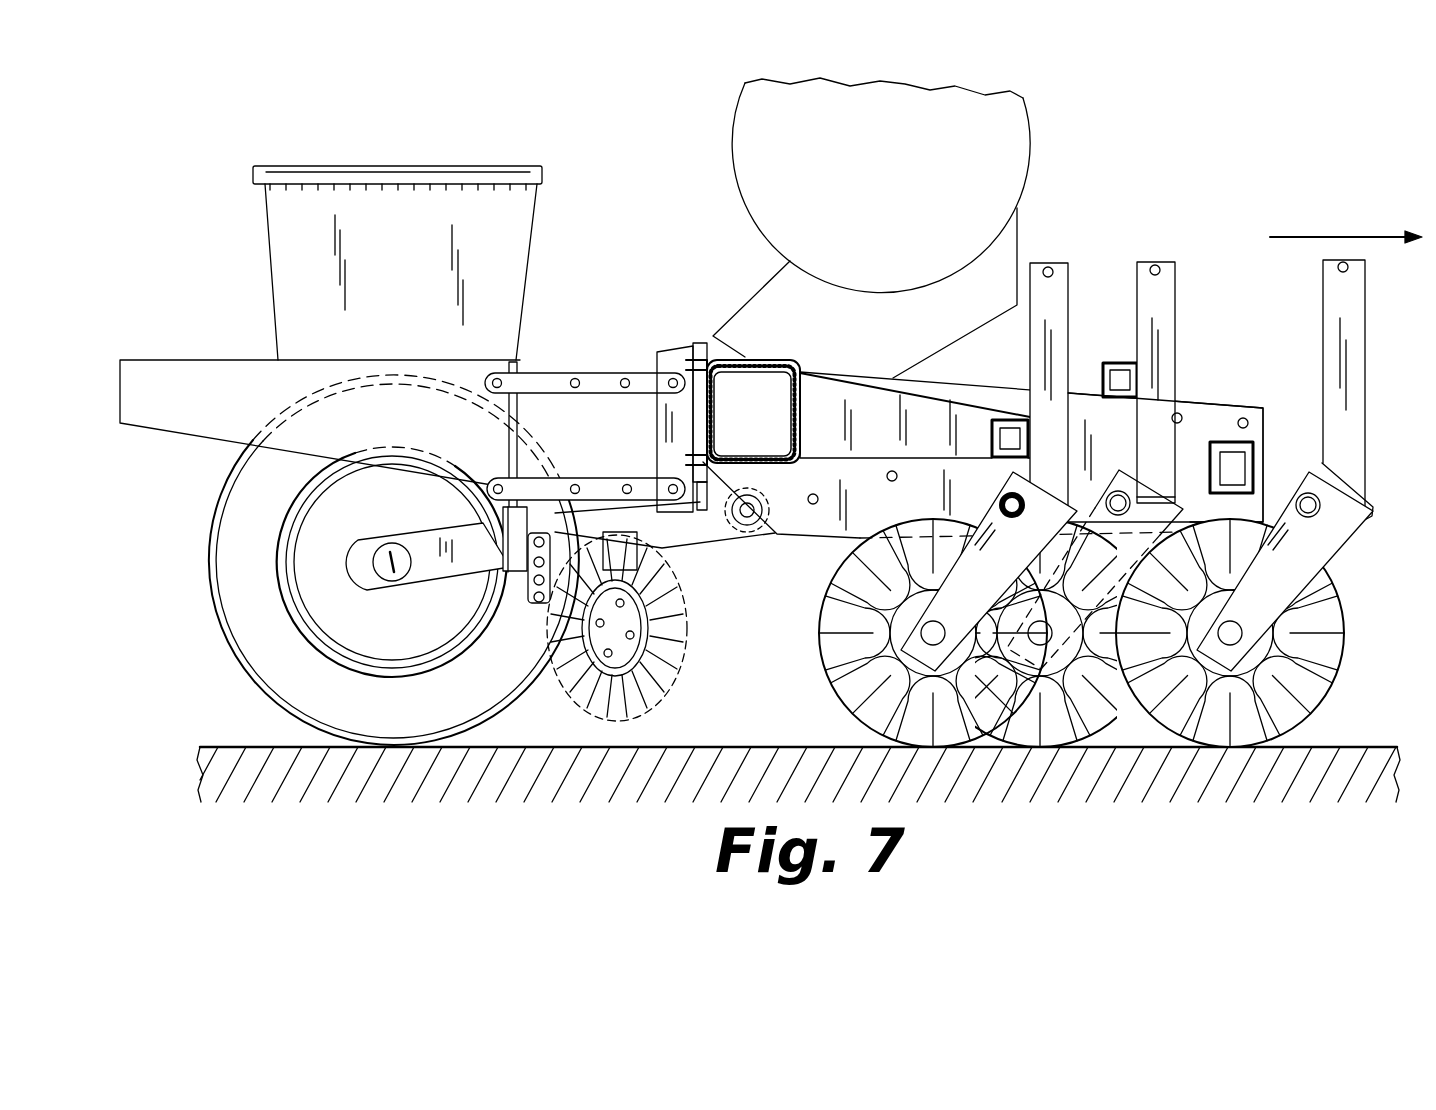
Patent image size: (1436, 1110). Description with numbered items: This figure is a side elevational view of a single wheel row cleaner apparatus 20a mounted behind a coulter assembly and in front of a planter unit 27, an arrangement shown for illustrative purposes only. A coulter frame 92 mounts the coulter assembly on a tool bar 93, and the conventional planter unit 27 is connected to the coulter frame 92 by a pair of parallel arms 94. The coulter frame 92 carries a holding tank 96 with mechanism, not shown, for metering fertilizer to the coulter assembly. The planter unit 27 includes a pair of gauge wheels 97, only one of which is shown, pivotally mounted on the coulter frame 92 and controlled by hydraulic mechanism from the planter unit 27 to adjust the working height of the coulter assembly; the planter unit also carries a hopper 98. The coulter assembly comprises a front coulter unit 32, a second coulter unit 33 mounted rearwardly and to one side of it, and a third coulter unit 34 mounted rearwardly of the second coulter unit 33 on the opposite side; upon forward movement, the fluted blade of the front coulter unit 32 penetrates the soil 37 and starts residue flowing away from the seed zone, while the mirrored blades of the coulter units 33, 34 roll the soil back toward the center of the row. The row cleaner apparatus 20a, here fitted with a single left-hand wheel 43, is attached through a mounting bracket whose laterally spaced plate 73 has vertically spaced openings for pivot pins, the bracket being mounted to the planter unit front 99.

The seed hopper 98 is at (288, 246).
The planter unit 27 is at (566, 246).
The holding tank 96 is at (1013, 168).
The tool bar 93 is at (750, 353).
The parallel arms 94 is at (615, 373).
The planter unit front 99 is at (518, 410).
The coulter frame 92 is at (1213, 410).
The gauge wheels 97 is at (213, 549).
The laterally spaced plate 73 is at (527, 568).
The left-hand wheel 43 is at (708, 628).
The single wheel row cleaner apparatus 20a is at (688, 660).
The third coulter unit 34 is at (828, 717).
The second coulter unit 33 is at (1072, 748).
The front coulter unit 32 is at (1362, 636).
The soil 37 is at (238, 746).